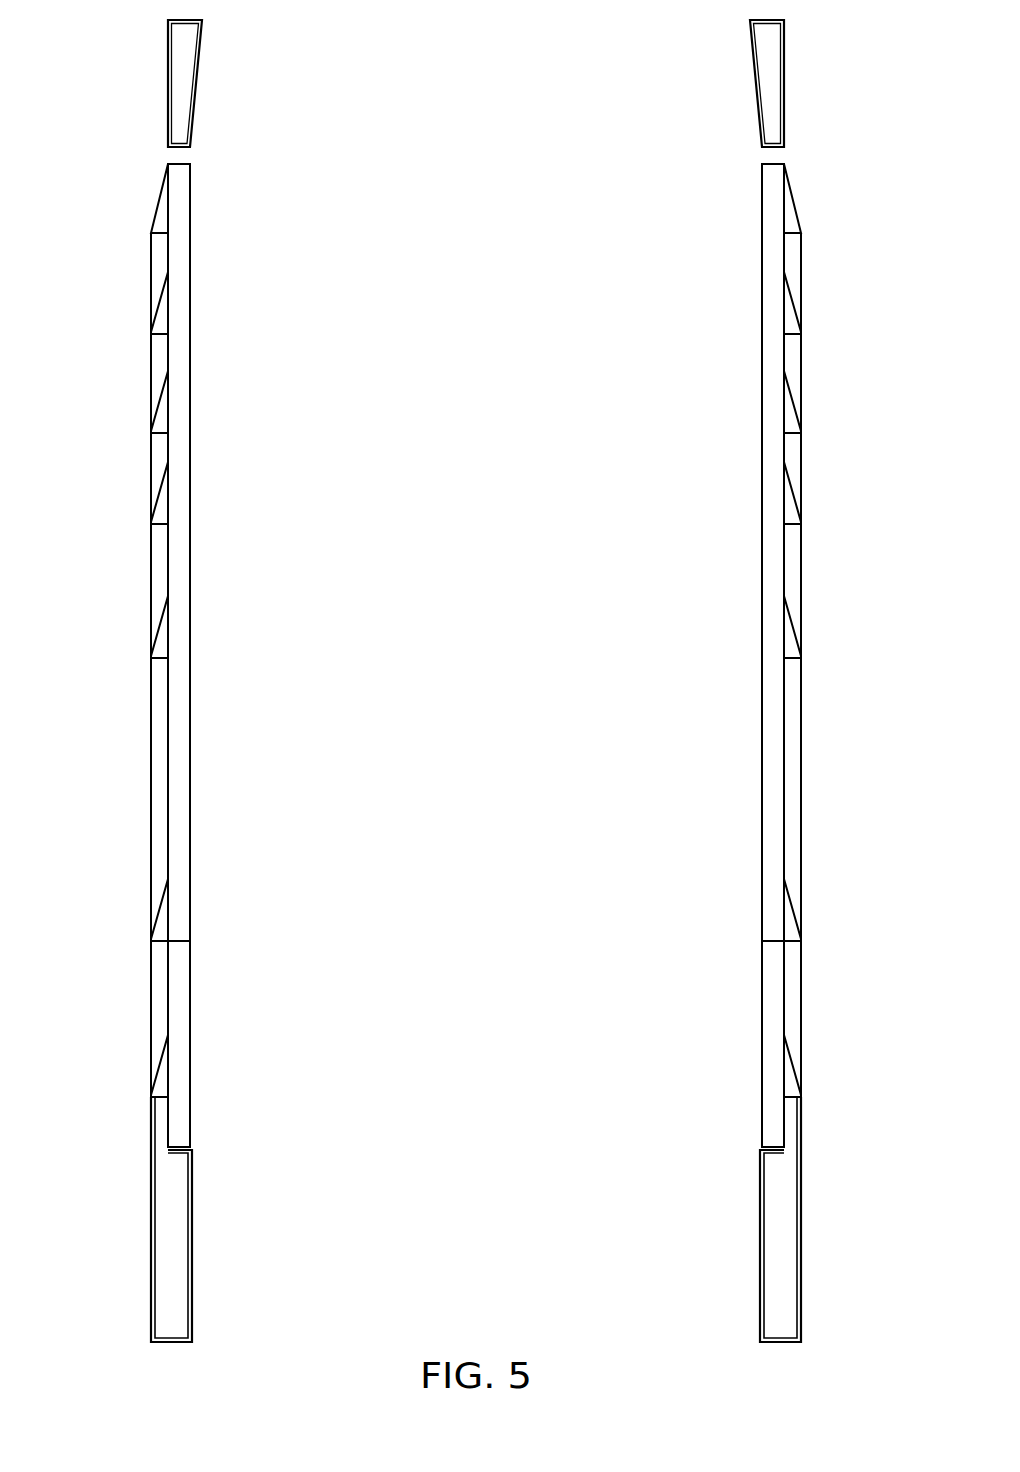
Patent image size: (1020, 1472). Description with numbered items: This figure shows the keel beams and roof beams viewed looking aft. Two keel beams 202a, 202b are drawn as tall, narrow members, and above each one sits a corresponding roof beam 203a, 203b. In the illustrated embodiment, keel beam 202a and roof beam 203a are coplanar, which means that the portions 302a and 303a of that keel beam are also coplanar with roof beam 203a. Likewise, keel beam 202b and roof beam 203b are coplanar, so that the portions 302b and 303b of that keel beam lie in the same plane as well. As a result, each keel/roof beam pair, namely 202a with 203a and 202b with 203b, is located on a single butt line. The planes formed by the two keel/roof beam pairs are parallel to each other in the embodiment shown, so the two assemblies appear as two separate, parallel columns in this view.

The roof beam 203a is at (168, 82).
The roof beam 203b is at (784, 82).
The keel beam 202a is at (151, 368).
The keel beam 202b is at (801, 368).
The portion of keel beam 303a is at (125, 626).
The portion of keel beam 303b is at (829, 626).
The portion of keel beam 302a is at (125, 1144).
The portion of keel beam 302b is at (829, 1144).